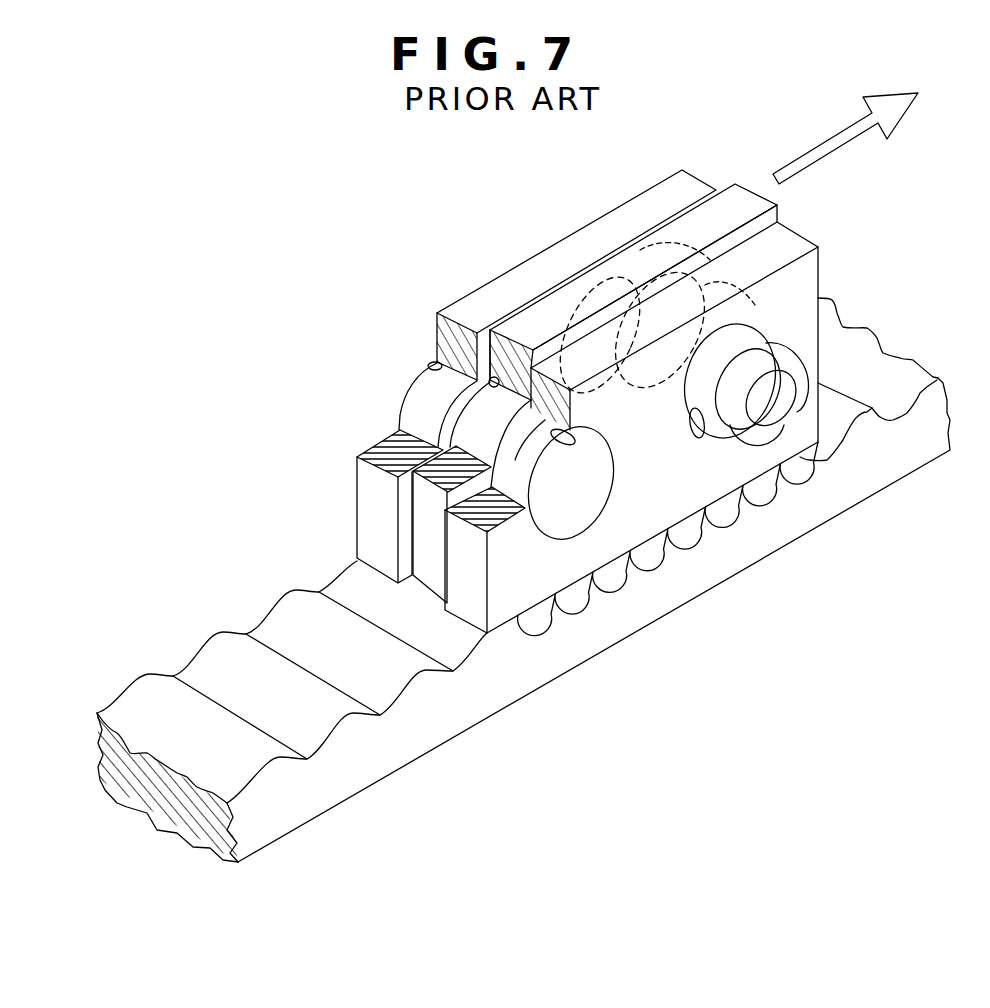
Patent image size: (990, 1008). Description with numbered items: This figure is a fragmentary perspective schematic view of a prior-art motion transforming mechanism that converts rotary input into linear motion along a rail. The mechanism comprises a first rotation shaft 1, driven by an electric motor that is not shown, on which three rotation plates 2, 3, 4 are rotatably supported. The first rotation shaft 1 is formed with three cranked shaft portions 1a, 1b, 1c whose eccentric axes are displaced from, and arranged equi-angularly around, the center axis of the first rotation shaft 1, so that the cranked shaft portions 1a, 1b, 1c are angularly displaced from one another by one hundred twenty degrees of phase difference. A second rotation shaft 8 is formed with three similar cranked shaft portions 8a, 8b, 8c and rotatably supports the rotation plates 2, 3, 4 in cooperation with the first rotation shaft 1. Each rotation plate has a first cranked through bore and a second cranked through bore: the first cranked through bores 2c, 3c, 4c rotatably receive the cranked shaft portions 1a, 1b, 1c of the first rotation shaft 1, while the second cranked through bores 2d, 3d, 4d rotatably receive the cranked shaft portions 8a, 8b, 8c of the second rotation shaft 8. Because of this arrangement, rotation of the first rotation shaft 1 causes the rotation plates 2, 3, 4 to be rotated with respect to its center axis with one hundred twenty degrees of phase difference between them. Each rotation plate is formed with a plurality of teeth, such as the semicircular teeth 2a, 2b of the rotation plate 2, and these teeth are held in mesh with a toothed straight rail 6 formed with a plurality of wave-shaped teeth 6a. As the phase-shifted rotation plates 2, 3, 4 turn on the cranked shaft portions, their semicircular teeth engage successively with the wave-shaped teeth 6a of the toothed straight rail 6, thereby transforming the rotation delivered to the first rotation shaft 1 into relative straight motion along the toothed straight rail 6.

The first rotation shaft 1 is at (724, 337).
The cranked shaft portion 1a is at (745, 317).
The cranked shaft portion 1b is at (748, 345).
The cranked shaft portion 1c is at (787, 437).
The rotation plate 2 is at (679, 427).
The tooth 2a is at (763, 492).
The tooth 2b is at (698, 537).
The first cranked through bore 2c is at (702, 437).
The second cranked through bore 2d is at (573, 436).
The rotation plate 3 is at (653, 289).
The first cranked through bore 3c is at (659, 329).
The second cranked through bore 3d is at (488, 332).
The rotation plate 4 is at (556, 264).
The first cranked through bore 4c is at (600, 335).
The second cranked through bore 4d is at (437, 363).
The toothed straight rail 6 is at (437, 748).
The tooth 6a is at (290, 601).
The second rotation shaft 8 is at (582, 476).
The cranked shaft portion 8a is at (446, 414).
The cranked shaft portion 8b is at (500, 440).
The cranked shaft portion 8c is at (538, 466).